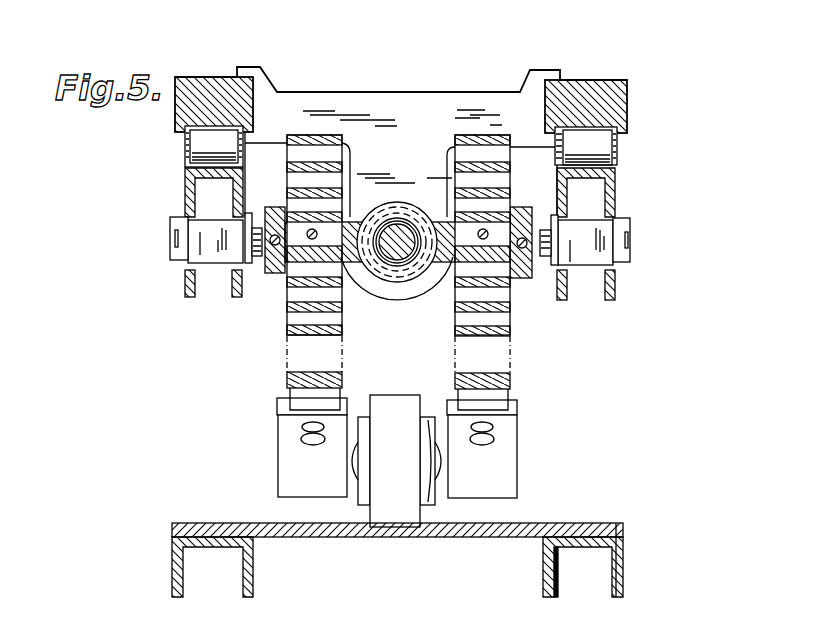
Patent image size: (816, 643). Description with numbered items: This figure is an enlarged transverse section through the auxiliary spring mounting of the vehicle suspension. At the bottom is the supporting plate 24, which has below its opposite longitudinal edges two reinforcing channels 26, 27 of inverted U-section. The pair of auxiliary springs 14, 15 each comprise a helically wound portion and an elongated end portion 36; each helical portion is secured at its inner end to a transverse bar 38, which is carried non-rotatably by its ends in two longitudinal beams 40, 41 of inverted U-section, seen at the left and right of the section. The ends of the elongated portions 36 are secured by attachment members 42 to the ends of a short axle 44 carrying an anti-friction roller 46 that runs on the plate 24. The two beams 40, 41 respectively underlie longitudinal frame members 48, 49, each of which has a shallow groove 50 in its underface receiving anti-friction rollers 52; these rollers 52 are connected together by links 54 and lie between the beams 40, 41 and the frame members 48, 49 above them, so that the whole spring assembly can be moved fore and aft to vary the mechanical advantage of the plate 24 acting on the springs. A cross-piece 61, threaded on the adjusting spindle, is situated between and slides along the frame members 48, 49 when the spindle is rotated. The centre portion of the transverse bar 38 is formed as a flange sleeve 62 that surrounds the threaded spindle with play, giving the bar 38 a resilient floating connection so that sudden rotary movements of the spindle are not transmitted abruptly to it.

The auxiliary spring 14 is at (287, 312).
The auxiliary spring 15 is at (512, 310).
The plate 24 is at (393, 540).
The reinforcing channel 26 is at (543, 568).
The reinforcing channel 27 is at (253, 568).
The elongated end portion 36 is at (300, 352).
The transverse bar 38 is at (345, 262).
The longitudinal beam 40 is at (185, 182).
The longitudinal beam 41 is at (607, 180).
The attachment member 42 is at (278, 438).
The short axle 44 is at (440, 465).
The anti-friction roller 46 is at (393, 395).
The longitudinal frame member 48 is at (175, 110).
The longitudinal frame member 49 is at (545, 84).
The shallow groove 50 is at (217, 126).
The anti-friction roller 52 is at (187, 147).
The link 54 is at (200, 152).
The cross-piece 61 is at (405, 92).
The flange sleeve 62 is at (397, 200).